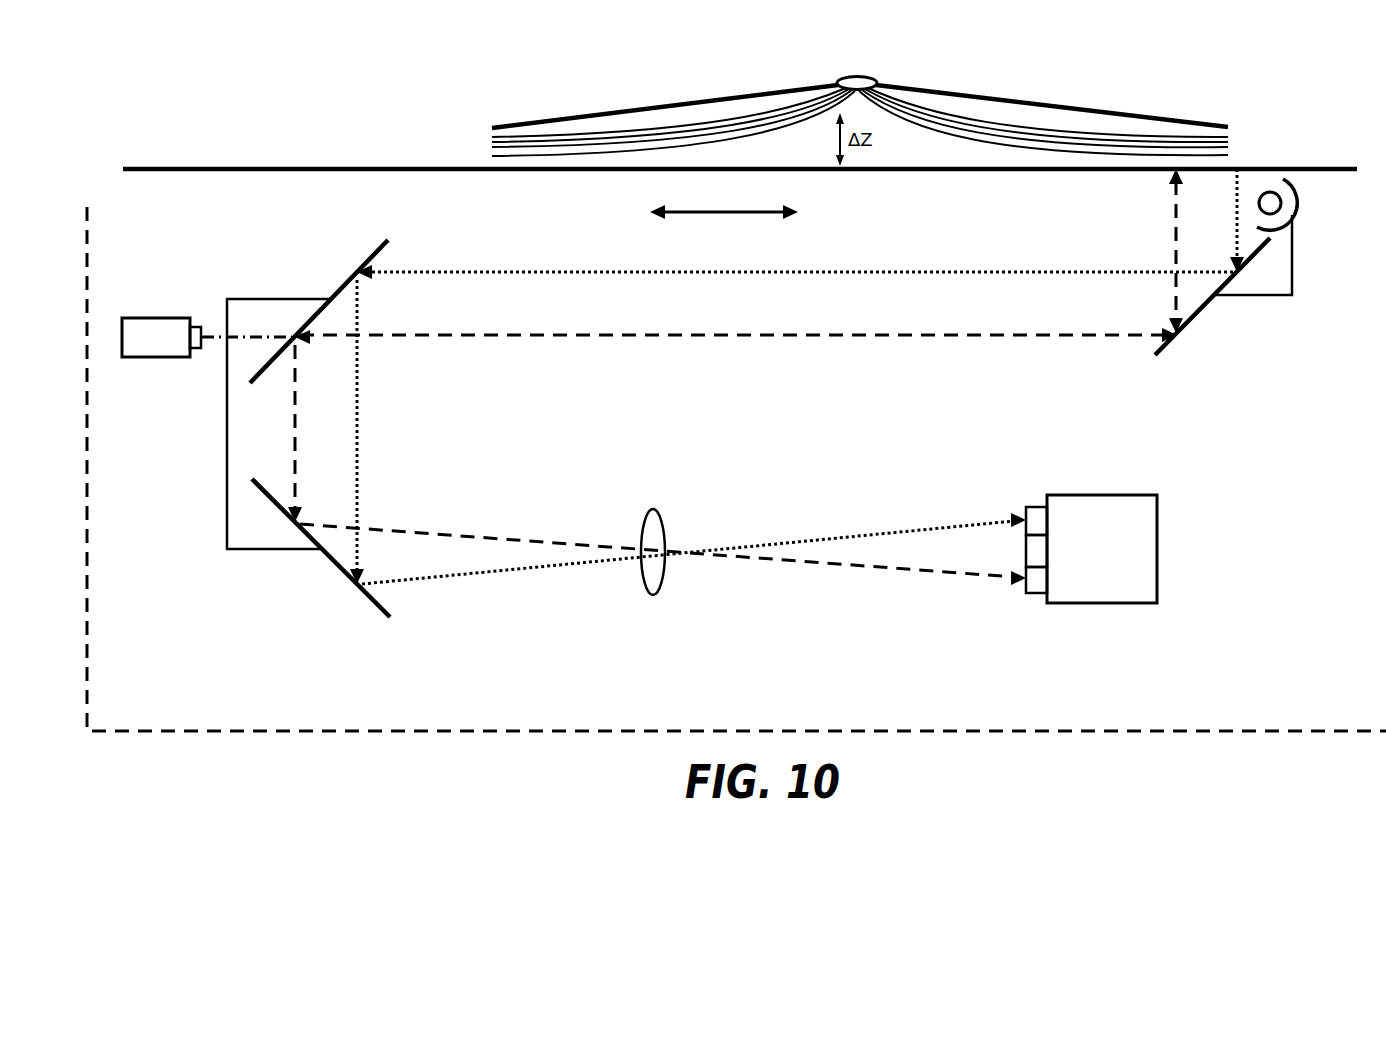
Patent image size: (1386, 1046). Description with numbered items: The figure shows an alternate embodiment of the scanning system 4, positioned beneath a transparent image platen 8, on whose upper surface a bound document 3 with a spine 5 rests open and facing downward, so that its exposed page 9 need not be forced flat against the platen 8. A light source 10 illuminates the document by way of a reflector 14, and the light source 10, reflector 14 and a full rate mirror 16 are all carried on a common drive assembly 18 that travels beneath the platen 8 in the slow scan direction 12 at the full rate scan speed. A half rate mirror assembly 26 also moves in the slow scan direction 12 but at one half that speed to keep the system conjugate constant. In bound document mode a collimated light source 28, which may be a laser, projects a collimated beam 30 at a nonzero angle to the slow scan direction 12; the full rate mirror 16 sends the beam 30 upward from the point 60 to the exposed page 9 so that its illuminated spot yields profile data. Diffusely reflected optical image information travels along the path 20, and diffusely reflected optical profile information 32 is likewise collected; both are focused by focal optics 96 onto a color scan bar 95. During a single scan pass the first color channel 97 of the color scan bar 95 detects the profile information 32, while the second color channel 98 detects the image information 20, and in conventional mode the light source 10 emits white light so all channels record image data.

The bound document 3 is at (955, 95).
The scanning system 4 is at (945, 731).
The spine 5 is at (857, 77).
The transparent image platen 8 is at (338, 168).
The exposed page 9 is at (977, 140).
The light source 10 is at (1267, 192).
The slow scan direction 12 is at (720, 213).
The reflector 14 is at (1299, 197).
The full rate mirror 16 is at (1200, 316).
The common drive assembly 18 is at (1292, 255).
The optical image information path 20 is at (527, 275).
The half rate mirror assembly 26 is at (225, 437).
The collimated light source 28 is at (150, 318).
The collimated beam 30 is at (255, 340).
The diffusely reflected optical profile information 32 is at (450, 536).
The point on full rate mirror 60 is at (1178, 340).
The color scan bar 95 is at (1105, 495).
The focal optics 96 is at (653, 509).
The first color channel 97 is at (1037, 505).
The second color channel 98 is at (1037, 597).